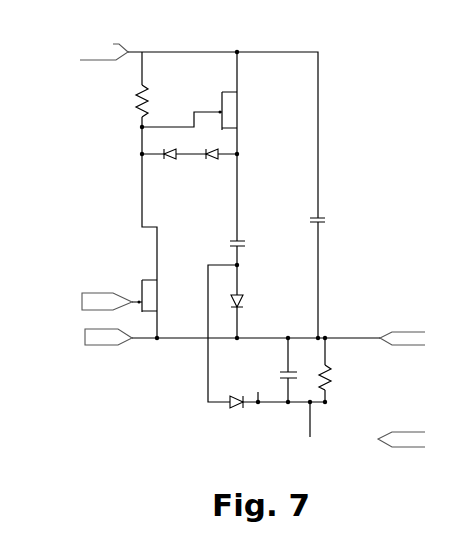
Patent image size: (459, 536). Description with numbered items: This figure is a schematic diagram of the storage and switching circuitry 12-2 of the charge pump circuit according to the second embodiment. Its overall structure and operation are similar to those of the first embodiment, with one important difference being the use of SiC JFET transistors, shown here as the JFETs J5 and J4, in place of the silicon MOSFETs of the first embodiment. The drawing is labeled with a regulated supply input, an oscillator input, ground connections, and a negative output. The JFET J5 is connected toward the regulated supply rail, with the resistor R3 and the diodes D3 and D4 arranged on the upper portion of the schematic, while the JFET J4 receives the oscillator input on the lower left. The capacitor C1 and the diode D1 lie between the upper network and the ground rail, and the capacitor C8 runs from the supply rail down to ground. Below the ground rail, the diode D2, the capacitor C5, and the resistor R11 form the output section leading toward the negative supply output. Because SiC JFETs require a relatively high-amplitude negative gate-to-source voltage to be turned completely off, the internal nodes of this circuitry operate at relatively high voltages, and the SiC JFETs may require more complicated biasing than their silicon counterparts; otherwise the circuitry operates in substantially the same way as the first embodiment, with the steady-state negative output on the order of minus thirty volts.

The storage and switching circuitry 12-2 is at (128, 437).
The resistor R3 is at (149, 100).
The resistor R11 is at (335, 377).
The capacitor C1 is at (242, 237).
The capacitor C8 is at (322, 213).
The capacitor C5 is at (293, 368).
The diode D3 is at (170, 149).
The diode D4 is at (213, 149).
The diode D1 is at (243, 294).
The diode D2 is at (237, 396).
The SiC JFET J5 is at (235, 111).
The SiC JFET J4 is at (154, 296).